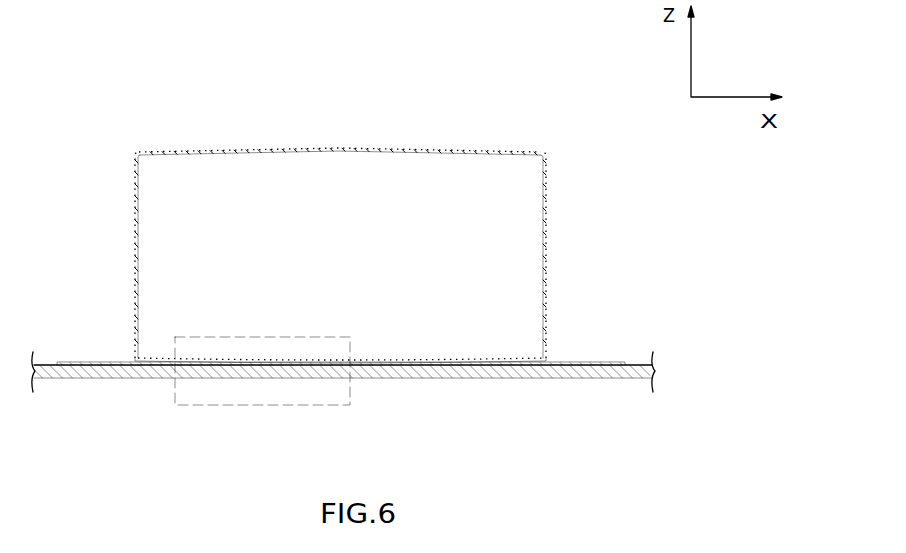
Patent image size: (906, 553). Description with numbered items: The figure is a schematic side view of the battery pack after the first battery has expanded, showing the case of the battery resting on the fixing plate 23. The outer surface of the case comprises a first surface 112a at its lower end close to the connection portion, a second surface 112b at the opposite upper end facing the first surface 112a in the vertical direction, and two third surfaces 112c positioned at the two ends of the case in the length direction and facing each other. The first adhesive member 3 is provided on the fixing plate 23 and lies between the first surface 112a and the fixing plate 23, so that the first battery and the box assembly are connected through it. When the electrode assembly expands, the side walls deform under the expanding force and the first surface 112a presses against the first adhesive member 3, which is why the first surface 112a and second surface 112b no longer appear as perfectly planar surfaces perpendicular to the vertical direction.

The first adhesive member 3 is at (77, 363).
The fixing plate 23 is at (455, 380).
The first surface 112a is at (426, 362).
The second surface 112b is at (322, 148).
The third surfaces 112c is at (135, 258).